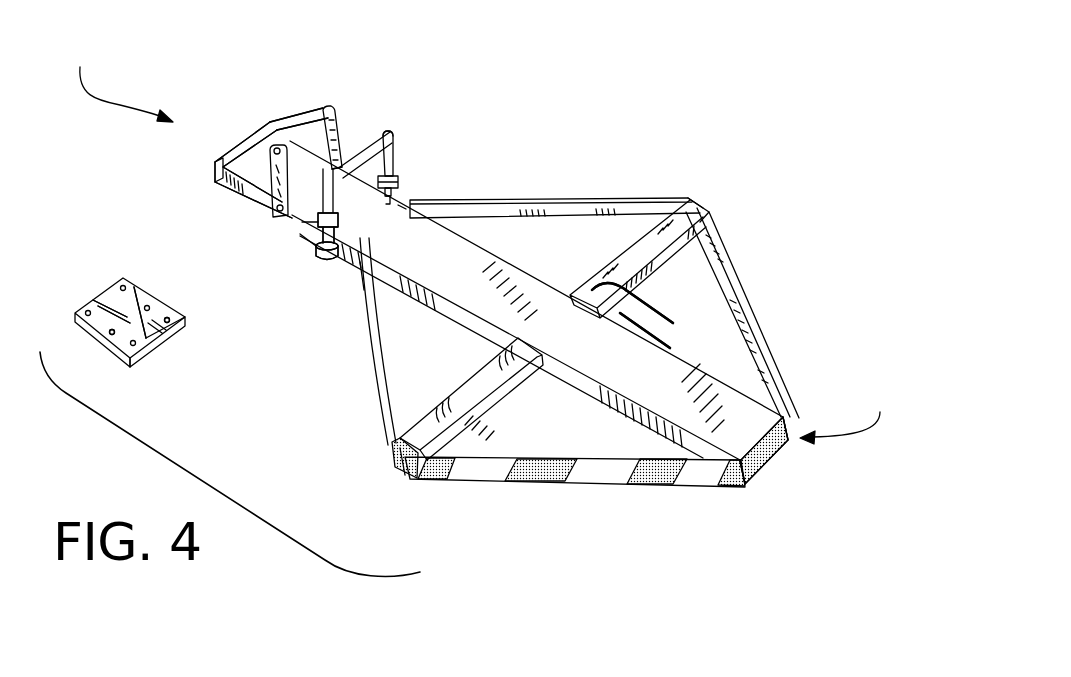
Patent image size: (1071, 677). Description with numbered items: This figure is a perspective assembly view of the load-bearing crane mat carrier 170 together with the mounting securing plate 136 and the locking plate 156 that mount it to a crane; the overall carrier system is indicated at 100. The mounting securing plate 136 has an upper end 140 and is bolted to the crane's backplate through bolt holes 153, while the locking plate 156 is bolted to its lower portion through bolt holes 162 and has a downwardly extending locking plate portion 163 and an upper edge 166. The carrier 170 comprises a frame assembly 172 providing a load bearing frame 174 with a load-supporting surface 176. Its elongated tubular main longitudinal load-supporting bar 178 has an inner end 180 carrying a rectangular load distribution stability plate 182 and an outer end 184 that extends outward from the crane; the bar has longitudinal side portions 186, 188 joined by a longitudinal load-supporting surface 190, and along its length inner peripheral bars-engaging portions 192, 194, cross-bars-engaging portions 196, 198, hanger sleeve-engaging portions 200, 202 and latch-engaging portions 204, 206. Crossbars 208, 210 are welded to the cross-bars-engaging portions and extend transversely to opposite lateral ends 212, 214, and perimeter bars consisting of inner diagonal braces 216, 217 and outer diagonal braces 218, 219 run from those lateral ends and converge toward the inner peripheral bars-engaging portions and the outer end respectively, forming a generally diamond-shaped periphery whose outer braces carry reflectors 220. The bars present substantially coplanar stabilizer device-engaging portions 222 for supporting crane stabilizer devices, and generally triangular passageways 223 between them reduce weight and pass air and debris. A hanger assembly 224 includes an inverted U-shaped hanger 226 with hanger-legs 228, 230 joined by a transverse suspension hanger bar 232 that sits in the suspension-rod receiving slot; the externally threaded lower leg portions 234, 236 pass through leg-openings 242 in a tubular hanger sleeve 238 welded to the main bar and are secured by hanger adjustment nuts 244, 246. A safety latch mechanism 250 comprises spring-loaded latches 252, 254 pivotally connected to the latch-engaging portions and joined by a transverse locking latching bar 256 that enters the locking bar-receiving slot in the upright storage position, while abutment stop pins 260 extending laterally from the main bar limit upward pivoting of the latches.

The cart assembly 100 is at (114, 80).
The mounting securing plate 136 is at (103, 297).
The upper end 140 is at (108, 285).
The bolt holes 153 is at (106, 338).
The locking plate 156 is at (150, 352).
The bolt holes 162 is at (168, 344).
The downwardly extending locking plate portion 163 is at (170, 323).
The upper edge 166 is at (139, 330).
The crane mat carrier 170 is at (851, 415).
The frame assembly 172 is at (712, 211).
The load bearing frame 174 is at (730, 285).
The load-supporting surface 176 is at (650, 318).
The main longitudinal load-supporting bar 178 is at (538, 284).
The inner end 180 is at (275, 118).
The load distribution stability plate 182 is at (236, 149).
The outer end 184 is at (787, 416).
The longitudinal side portion 186 is at (664, 428).
The longitudinal side portion 188 is at (584, 284).
The longitudinal load-supporting surface 190 is at (596, 378).
The inner peripheral bars-engaging portion 192 is at (358, 272).
The inner peripheral bars-engaging portion 194 is at (412, 205).
The cross-bars-engaging portion 196 is at (540, 367).
The cross-bars-engaging portion 198 is at (670, 348).
The hanger sleeve-engaging portion 200 is at (314, 250).
The hanger sleeve-engaging portion 202 is at (403, 193).
The latch-engaging portion 204 is at (256, 201).
The latch-engaging portion 206 is at (341, 146).
The crossbar 208 is at (462, 392).
The crossbar 210 is at (632, 285).
The lateral end 212 is at (400, 470).
The lateral end 214 is at (690, 203).
The inner diagonal brace 216 is at (382, 418).
The inner diagonal brace 217 is at (541, 200).
The outer diagonal brace 218 is at (578, 488).
The outer diagonal brace 219 is at (724, 268).
The reflectors 220 is at (748, 474).
The stabilizer device-engaging portions 222 is at (776, 441).
The triangular passageways 223 is at (653, 458).
The hanger assembly 224 is at (392, 131).
The hanger 226 is at (314, 186).
The hanger-leg 228 is at (350, 196).
The hanger-leg 230 is at (396, 150).
The transverse suspension hanger bar 232 is at (371, 146).
The externally threaded lower leg portion 234 is at (356, 218).
The externally threaded lower leg portion 236 is at (397, 168).
The tubular hanger sleeve 238 is at (336, 266).
The leg-openings 242 is at (316, 254).
The hanger adjustment nut 244 is at (368, 240).
The hanger adjustment nut 246 is at (400, 183).
The safety latch mechanism 250 is at (226, 156).
The spring-loaded latch 252 is at (226, 187).
The spring-loaded latch 254 is at (329, 106).
The transverse locking latching bar 256 is at (303, 122).
The abutment stop pins 260 is at (303, 222).